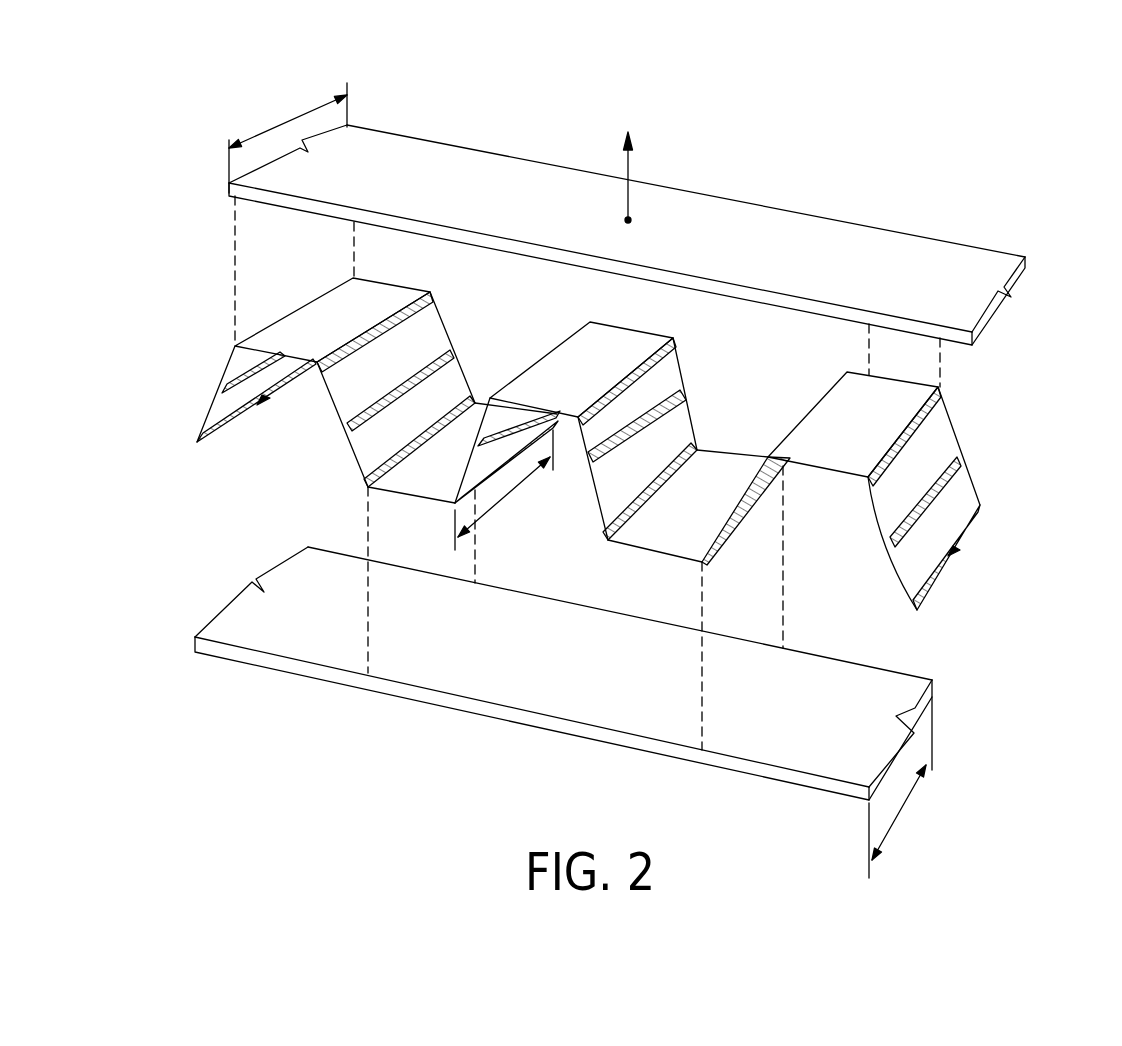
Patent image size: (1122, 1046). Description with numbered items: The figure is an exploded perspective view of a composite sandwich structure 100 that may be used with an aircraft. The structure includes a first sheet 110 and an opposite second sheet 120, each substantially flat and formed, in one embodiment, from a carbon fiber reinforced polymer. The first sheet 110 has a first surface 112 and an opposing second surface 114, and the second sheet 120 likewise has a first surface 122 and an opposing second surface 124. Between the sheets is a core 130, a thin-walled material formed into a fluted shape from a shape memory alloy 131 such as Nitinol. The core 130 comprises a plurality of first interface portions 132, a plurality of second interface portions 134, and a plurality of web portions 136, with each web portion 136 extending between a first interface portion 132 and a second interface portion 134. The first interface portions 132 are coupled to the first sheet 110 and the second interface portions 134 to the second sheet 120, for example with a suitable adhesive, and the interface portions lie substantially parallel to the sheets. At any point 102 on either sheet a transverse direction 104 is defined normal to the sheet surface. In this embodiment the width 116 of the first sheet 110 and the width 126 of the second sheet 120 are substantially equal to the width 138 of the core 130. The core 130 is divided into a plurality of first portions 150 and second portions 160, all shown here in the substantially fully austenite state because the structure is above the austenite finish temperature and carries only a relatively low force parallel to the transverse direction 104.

The composite sandwich structure 100 is at (905, 98).
The point 102 is at (630, 221).
The transverse direction 104 is at (630, 167).
The first sheet 110 is at (597, 246).
The first surface 112 is at (963, 338).
The second surface 114 is at (973, 267).
The width 116 is at (288, 118).
The second sheet 120 is at (570, 673).
The first surface 122 is at (890, 690).
The second surface 124 is at (925, 712).
The width 126 is at (900, 812).
The core 130 is at (614, 436).
The shape memory alloy 131 is at (872, 507).
The first interface portion 132 is at (315, 316).
The second interface portion 134 is at (725, 475).
The web portion 136 is at (430, 325).
The width 138 is at (510, 496).
The first portion 150 is at (368, 480).
The second portion 160 is at (582, 397).